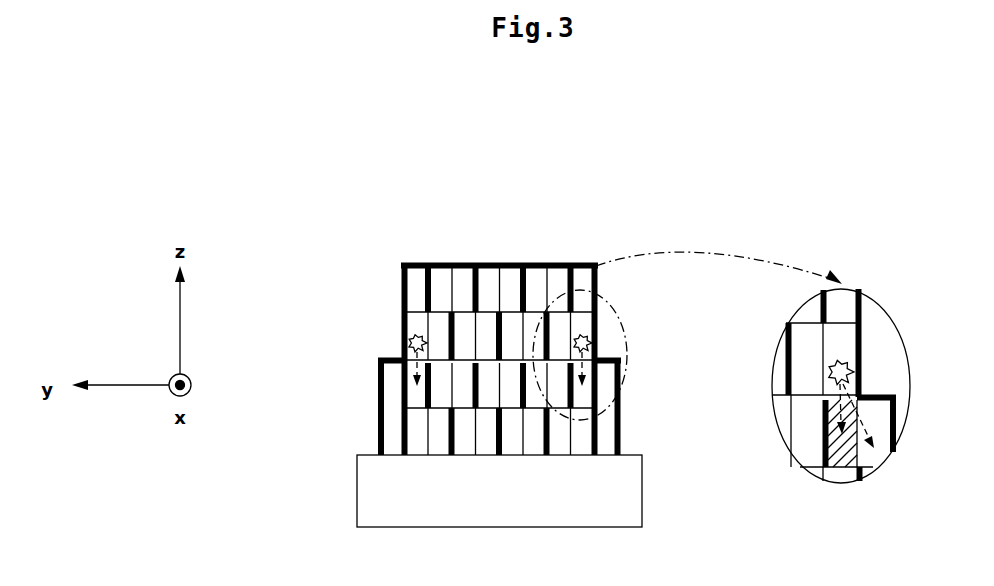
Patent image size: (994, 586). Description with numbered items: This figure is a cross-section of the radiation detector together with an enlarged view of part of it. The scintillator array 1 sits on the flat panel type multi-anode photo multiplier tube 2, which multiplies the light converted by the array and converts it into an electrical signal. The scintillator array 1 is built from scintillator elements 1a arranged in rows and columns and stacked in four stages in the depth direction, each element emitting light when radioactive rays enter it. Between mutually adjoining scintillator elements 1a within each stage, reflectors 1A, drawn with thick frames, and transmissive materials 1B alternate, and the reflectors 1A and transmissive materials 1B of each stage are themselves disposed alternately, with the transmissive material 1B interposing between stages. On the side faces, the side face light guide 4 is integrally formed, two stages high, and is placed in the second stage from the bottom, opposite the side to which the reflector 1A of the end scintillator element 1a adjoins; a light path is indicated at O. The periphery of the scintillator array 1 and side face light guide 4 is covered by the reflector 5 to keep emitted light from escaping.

The scintillator array 1 is at (402, 263).
The reflector 1A is at (426, 276).
The transmissive material 1B is at (498, 285).
The scintillator element 1a is at (483, 288).
The flat panel type multi-anode photo multiplier tube 2 is at (642, 486).
The side face light guide 4 is at (391, 437).
The reflector 5 is at (402, 283).
The short-circuit point O is at (395, 377).